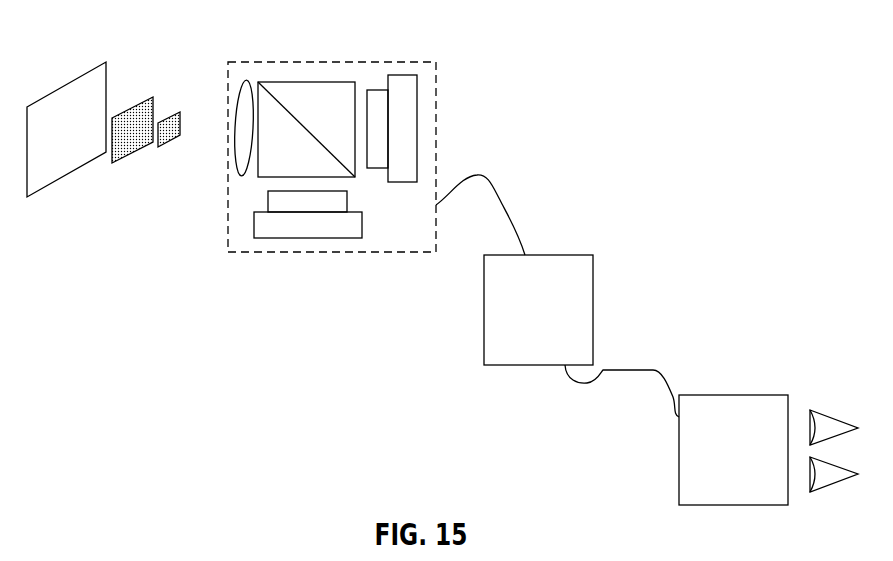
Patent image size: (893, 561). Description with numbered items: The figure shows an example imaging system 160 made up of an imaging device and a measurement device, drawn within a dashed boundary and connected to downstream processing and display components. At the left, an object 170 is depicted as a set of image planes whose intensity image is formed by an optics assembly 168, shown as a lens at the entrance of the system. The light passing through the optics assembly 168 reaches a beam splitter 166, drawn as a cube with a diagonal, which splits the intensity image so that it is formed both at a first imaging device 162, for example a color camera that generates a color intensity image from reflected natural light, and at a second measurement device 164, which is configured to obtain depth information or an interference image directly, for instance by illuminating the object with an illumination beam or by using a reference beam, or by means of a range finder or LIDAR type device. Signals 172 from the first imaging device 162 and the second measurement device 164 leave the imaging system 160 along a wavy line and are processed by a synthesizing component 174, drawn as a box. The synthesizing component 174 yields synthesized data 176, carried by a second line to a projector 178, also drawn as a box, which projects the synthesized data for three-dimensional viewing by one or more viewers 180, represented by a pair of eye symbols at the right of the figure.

The imaging system 160 is at (436, 62).
The first imaging device 162 is at (312, 228).
The second measurement device 164 is at (412, 130).
The beam splitter 166 is at (307, 80).
The optics assembly 168 is at (238, 80).
The object 170 is at (97, 223).
The signals 172 is at (488, 183).
The synthesizing component 174 is at (500, 365).
The synthesized data 176 is at (662, 372).
The projector 178 is at (698, 505).
The viewers 180 is at (835, 400).